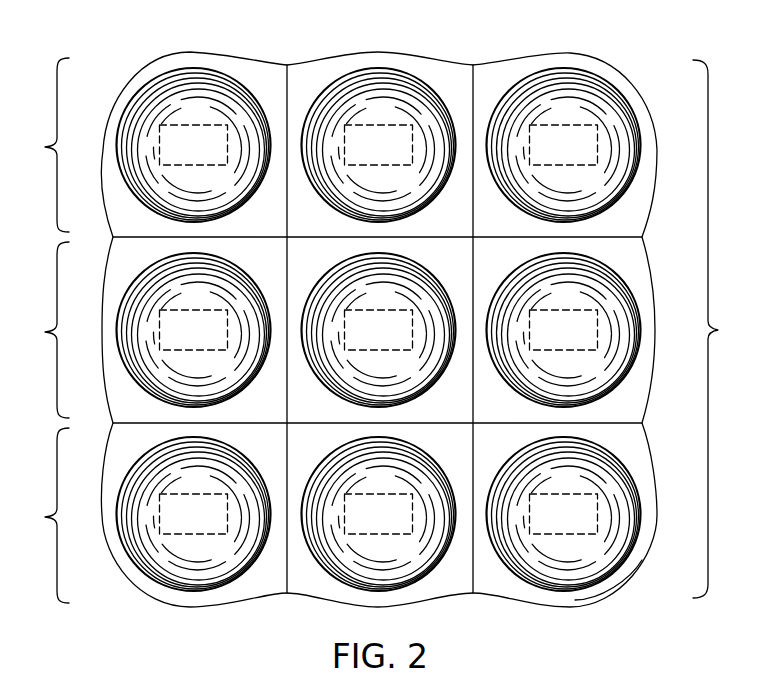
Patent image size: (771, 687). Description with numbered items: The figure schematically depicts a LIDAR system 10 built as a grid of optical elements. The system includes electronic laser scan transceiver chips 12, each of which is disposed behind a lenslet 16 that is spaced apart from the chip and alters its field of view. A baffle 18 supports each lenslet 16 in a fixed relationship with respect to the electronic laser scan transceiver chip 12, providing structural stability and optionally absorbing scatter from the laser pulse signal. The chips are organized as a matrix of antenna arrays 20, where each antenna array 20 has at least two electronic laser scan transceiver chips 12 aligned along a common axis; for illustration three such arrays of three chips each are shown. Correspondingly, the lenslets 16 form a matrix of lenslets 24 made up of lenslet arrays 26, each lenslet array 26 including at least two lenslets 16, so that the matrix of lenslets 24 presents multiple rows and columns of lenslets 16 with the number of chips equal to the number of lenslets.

The LIDAR system 10 is at (645, 64).
The electronic laser scan transceiver chip 12 is at (188, 124).
The lenslet 16 is at (200, 68).
The baffle 18 is at (287, 74).
The matrix of antenna arrays 20 is at (42, 330).
The matrix of lenslets 24 is at (721, 329).
The lenslet array 26 is at (631, 562).